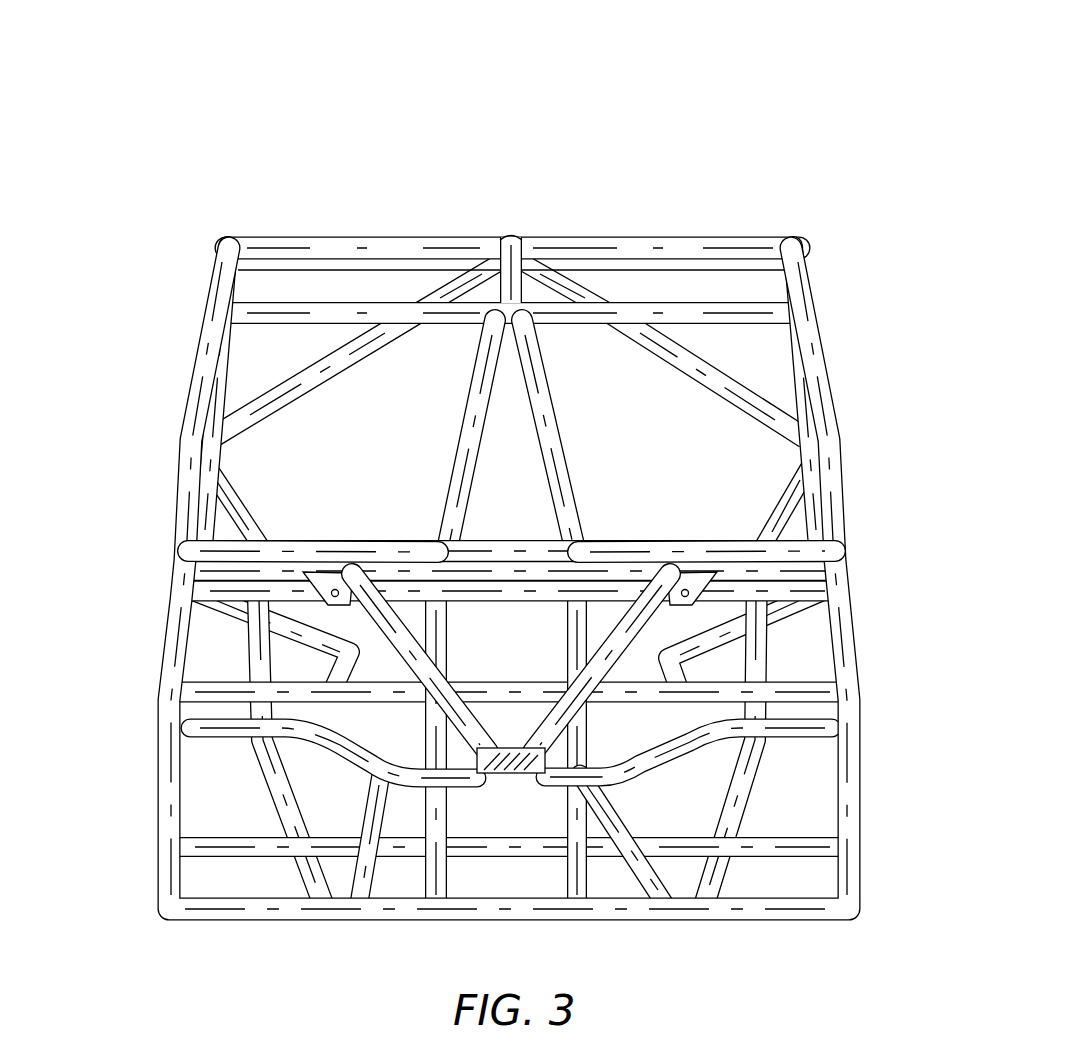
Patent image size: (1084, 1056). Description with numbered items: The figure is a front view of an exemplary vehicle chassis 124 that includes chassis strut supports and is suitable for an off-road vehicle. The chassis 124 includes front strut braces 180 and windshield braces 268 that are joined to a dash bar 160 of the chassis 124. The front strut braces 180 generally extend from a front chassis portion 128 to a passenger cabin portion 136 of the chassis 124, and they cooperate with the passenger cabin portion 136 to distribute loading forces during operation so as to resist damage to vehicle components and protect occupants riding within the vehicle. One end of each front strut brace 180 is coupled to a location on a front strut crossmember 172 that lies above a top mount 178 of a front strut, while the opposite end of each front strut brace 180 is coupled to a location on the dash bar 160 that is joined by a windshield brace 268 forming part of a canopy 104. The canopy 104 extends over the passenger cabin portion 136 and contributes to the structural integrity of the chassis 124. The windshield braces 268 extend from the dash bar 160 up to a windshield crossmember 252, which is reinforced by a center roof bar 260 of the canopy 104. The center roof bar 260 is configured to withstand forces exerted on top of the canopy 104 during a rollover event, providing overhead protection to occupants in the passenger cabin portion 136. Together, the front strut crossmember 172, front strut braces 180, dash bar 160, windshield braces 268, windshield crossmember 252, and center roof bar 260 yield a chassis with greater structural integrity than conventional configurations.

The canopy 104 is at (200, 208).
The vehicle chassis 124 is at (424, 80).
The front chassis portion 128 is at (120, 784).
The passenger cabin portion 136 is at (880, 398).
The dash bar 160 is at (510, 548).
The front strut crossmember 172 is at (511, 575).
The top mount 178 is at (328, 588).
The front strut brace 180 is at (403, 553).
The windshield crossmember 252 is at (637, 318).
The center roof bar 260 is at (503, 245).
The windshield brace 268 is at (460, 456).